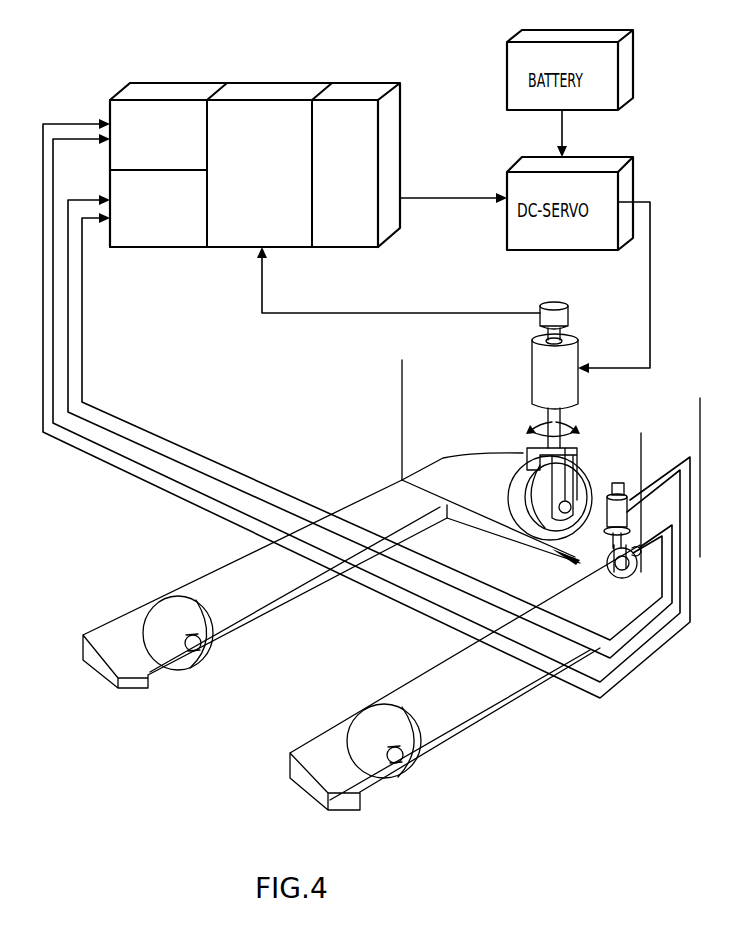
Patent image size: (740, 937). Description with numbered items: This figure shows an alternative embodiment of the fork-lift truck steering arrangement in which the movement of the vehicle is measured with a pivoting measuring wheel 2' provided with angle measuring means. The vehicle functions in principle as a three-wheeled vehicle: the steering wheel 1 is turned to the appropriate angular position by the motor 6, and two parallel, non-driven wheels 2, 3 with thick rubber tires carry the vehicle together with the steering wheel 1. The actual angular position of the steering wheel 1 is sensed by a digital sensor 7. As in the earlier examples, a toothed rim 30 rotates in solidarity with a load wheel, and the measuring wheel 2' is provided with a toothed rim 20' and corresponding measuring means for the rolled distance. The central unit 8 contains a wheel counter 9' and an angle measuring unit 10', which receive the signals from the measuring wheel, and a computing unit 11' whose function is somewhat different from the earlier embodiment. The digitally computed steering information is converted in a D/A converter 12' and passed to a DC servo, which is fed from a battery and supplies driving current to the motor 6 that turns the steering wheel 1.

The steering wheel 1 is at (588, 470).
The non-driven wheel 2 is at (265, 584).
The non-driven wheel 3 is at (400, 718).
The motor 6 is at (532, 382).
The digital sensor 7 is at (568, 316).
The central unit 8 is at (311, 66).
The wheel counter 9' is at (168, 106).
The angle measuring unit 10' is at (158, 224).
The computing unit 11' is at (269, 145).
The D/A converter 12' is at (345, 145).
The toothed rim 30 is at (620, 505).
The pivoting measuring wheel 2' is at (636, 543).
The toothed rim 20' is at (604, 569).